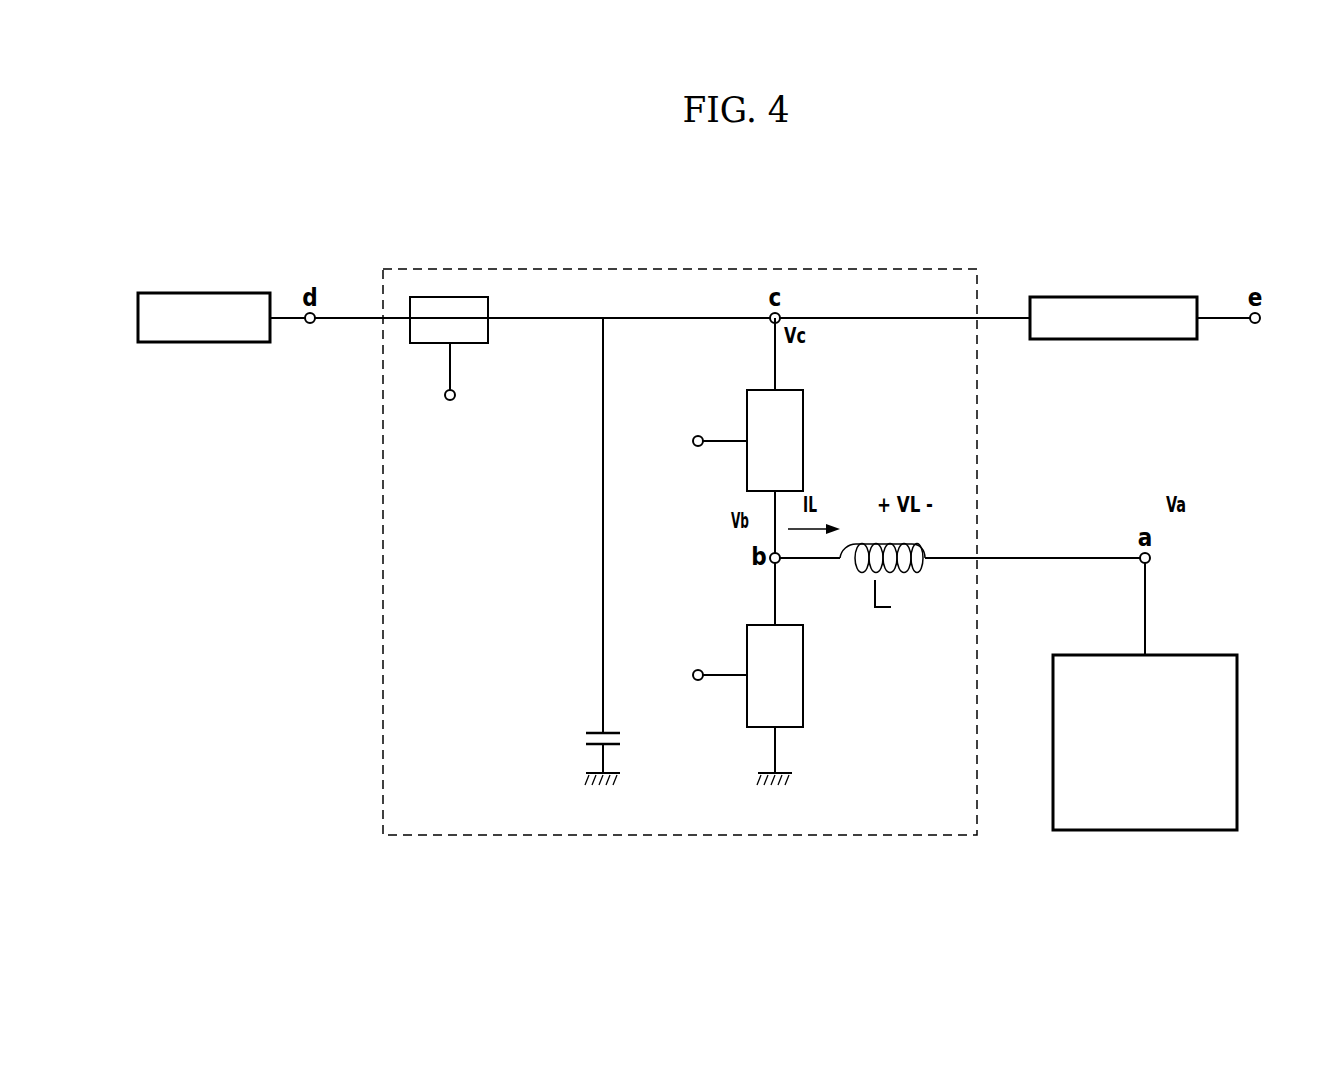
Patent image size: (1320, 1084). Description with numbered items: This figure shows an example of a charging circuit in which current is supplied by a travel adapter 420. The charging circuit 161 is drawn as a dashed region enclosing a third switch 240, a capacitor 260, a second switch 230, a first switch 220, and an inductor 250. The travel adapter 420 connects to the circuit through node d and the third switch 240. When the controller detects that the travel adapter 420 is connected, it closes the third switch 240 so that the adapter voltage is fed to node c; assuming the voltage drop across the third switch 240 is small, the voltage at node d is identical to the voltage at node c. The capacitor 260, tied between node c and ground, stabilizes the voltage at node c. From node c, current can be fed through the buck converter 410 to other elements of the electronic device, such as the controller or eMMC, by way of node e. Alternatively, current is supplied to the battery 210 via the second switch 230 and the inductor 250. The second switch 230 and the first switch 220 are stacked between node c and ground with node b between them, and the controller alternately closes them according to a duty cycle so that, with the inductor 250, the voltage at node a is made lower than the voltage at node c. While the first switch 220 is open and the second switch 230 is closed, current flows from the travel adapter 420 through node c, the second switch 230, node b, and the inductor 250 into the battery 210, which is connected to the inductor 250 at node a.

The travel adapter 420 is at (205, 293).
The third switch 240 is at (450, 297).
The buck converter 410 is at (1125, 297).
The second switch 230 is at (803, 441).
The first switch 220 is at (803, 675).
The inductor 250 is at (906, 573).
The capacitor 260 is at (590, 733).
The charging circuit 161 is at (383, 770).
The battery 210 is at (1188, 655).